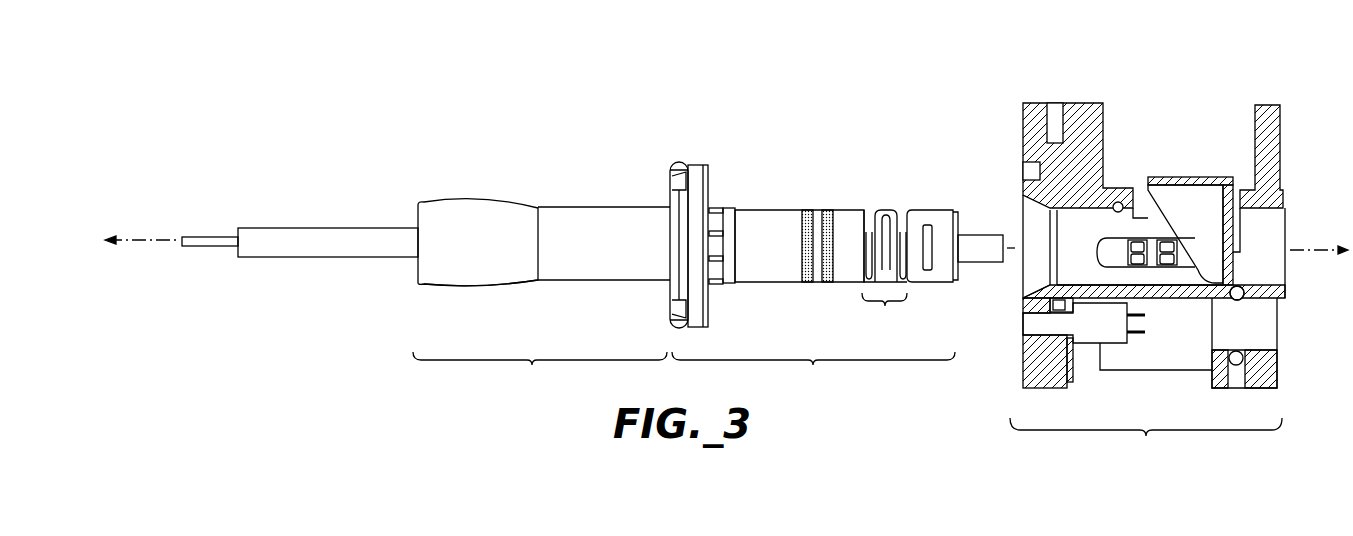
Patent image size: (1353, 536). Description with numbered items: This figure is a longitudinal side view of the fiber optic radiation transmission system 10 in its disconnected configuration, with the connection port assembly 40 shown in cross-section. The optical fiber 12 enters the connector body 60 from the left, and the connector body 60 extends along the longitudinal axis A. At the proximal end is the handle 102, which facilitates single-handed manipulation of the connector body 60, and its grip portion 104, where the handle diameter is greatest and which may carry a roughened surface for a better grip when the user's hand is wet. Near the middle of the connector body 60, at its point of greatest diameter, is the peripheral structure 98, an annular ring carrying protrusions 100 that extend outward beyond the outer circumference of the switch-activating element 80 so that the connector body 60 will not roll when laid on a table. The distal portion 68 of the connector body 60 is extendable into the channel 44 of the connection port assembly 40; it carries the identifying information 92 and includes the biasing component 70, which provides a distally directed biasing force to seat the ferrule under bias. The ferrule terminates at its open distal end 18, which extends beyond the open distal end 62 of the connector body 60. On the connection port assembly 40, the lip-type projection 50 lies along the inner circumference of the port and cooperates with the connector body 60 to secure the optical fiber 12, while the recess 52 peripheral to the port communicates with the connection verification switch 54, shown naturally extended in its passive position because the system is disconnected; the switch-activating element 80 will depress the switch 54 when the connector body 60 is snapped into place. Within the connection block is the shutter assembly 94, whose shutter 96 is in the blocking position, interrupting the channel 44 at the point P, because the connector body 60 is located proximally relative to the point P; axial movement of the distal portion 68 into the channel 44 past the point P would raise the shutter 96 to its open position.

The fiber optic radiation transmission system 10 is at (535, 100).
The optical fiber 12 is at (220, 238).
The open distal end of the ferrule 18 is at (990, 235).
The connection port assembly 40 is at (1068, 97).
The channel 44 is at (1152, 280).
The projection 50 is at (1020, 198).
The recess 52 is at (1020, 320).
The connection verification switch 54 is at (1038, 322).
The connector body 60 is at (454, 197).
The open distal end of the connector body 62 is at (957, 283).
The distal portion 68 is at (813, 302).
The biasing component 70 is at (884, 276).
The switch-activating element 80 is at (702, 157).
The identifying information 92 is at (825, 210).
The shutter assembly 94 is at (1177, 170).
The shutter 96 is at (1222, 178).
The peripheral structure 98 is at (681, 145).
The protrusion 100 is at (674, 166).
The handle 102 is at (541, 302).
The grip portion 104 is at (487, 284).
The point P is at (1222, 303).
The longitudinal axis A is at (1330, 248).